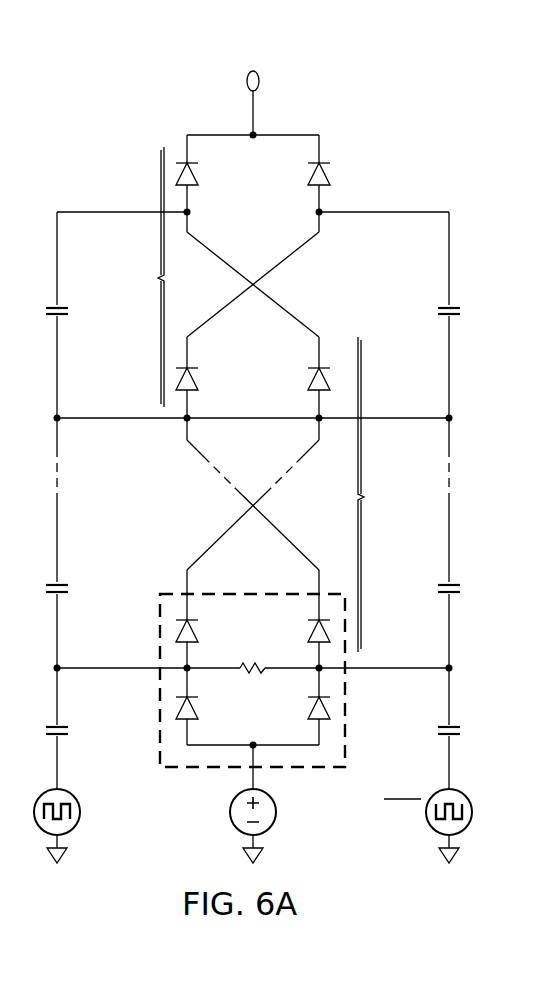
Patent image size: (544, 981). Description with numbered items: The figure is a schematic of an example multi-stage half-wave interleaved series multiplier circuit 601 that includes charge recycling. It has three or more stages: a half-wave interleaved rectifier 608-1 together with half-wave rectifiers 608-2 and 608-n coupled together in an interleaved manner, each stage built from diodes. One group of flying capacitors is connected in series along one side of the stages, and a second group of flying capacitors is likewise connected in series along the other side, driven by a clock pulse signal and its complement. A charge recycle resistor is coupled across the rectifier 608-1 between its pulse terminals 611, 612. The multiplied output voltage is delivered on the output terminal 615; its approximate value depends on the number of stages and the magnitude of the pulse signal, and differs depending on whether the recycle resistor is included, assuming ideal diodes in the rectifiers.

The multi-stage half-wave interleaved series multiplier circuit 601 is at (108, 88).
The output terminal 615 is at (259, 75).
The half-wave interleaved rectifier 608-1 is at (188, 774).
The half-wave rectifier 608-2 is at (312, 502).
The half-wave rectifier 608-n is at (206, 276).
The pulse terminal 611 is at (195, 672).
The pulse terminal 612 is at (311, 672).